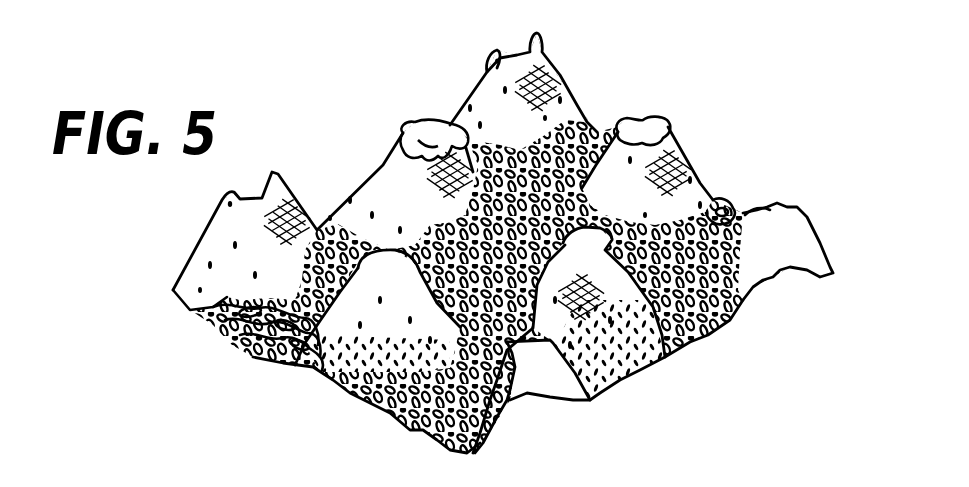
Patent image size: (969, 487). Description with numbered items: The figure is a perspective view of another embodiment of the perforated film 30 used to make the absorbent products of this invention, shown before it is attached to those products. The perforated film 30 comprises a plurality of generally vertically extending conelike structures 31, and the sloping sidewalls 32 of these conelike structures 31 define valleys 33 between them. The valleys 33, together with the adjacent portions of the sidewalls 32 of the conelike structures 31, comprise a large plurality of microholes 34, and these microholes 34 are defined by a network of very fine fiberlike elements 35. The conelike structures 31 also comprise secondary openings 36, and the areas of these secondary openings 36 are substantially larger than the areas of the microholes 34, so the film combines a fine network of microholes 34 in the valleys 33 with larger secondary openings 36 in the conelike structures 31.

The perforated film 30 is at (637, 75).
The conelike structures 31 is at (433, 212).
The sloping sidewalls 32 is at (316, 229).
The valleys 33 is at (437, 397).
The microholes 34 is at (247, 317).
The fiberlike elements 35 is at (302, 340).
The secondary openings 36 is at (420, 130).